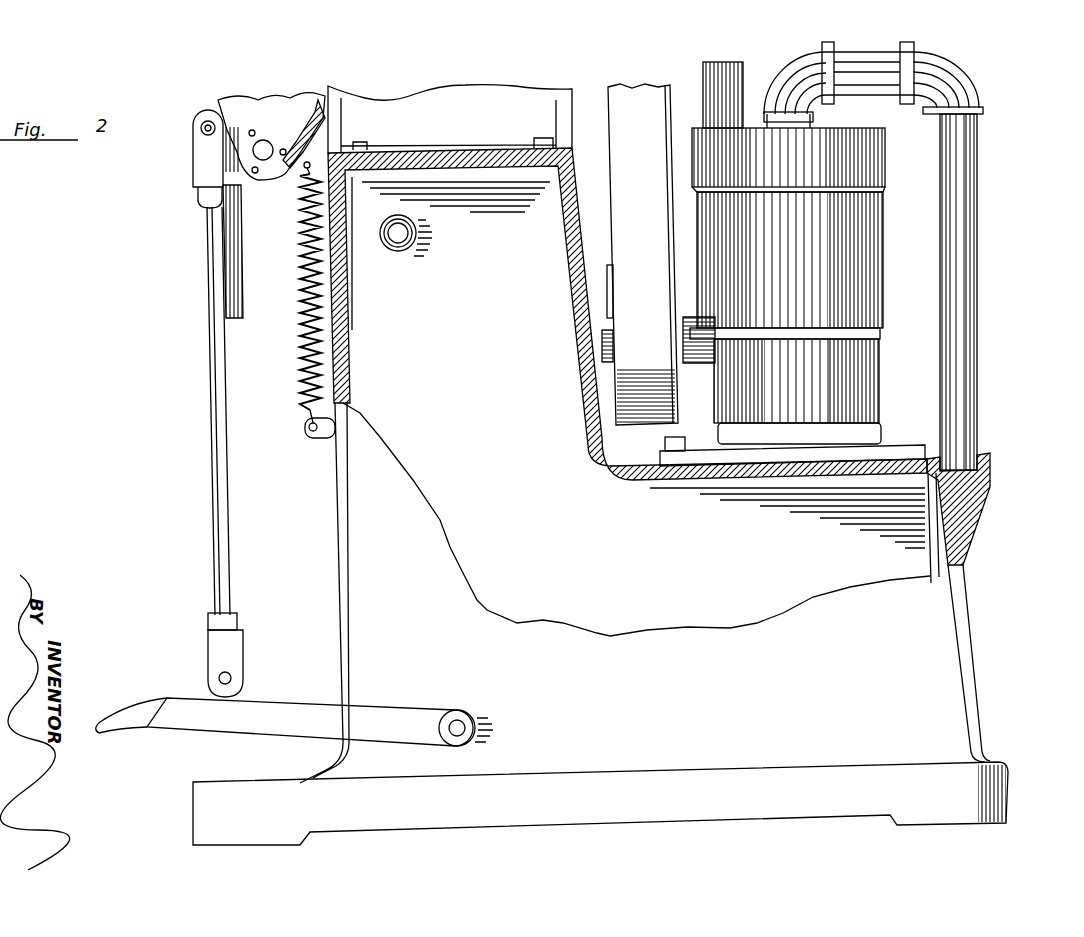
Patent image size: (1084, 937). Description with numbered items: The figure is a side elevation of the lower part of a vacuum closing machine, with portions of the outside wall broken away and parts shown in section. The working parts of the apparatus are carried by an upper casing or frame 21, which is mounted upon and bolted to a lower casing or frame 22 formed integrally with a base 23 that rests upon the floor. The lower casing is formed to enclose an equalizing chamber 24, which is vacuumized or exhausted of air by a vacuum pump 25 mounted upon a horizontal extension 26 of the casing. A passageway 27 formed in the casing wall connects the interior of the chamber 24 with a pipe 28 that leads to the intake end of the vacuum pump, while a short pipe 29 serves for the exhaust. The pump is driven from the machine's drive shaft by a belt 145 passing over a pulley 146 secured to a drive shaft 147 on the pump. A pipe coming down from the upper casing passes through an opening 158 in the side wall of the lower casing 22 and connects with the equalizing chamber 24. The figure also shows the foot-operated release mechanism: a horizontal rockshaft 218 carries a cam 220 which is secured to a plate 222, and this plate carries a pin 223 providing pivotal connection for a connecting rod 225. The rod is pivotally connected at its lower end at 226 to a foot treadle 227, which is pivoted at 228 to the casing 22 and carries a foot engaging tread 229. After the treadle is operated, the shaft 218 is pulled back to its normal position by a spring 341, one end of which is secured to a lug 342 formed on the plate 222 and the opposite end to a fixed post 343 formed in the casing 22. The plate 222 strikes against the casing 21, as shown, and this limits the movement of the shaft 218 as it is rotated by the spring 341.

The upper casing 21 is at (523, 103).
The lower casing 22 is at (570, 243).
The base 23 is at (1008, 773).
The equalizing chamber 24 is at (424, 480).
The vacuum pump 25 is at (784, 286).
The horizontal extension 26 is at (730, 472).
The passageway 27 is at (958, 513).
The pipe 28 is at (983, 297).
The short pipe 29 is at (703, 72).
The belt 145 is at (643, 254).
The pulley 146 is at (613, 312).
The drive shaft 147 is at (604, 348).
The opening 158 is at (398, 244).
The rockshaft 218 is at (267, 160).
The cam 220 is at (271, 136).
The plate 222 is at (230, 150).
The pin 223 is at (205, 130).
The connecting rod 225 is at (207, 385).
The pivotal connection 226 is at (231, 677).
The foot treadle 227 is at (310, 722).
The treadle pivot 228 is at (460, 725).
The foot engaging tread 229 is at (138, 704).
The spring 341 is at (300, 326).
The lug 342 is at (322, 151).
The fixed post 343 is at (327, 433).